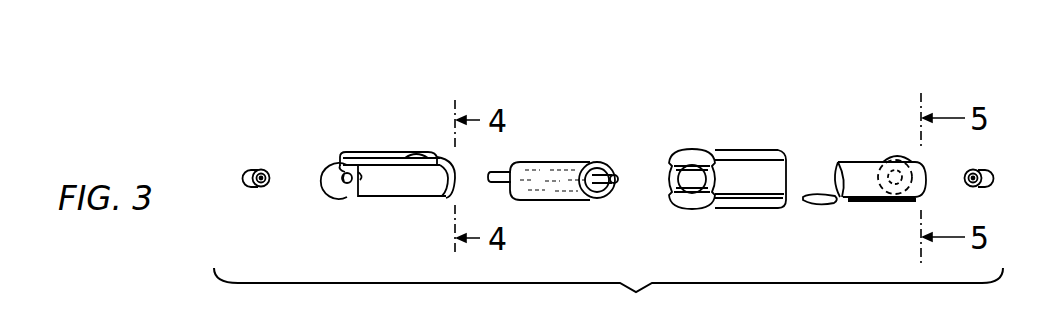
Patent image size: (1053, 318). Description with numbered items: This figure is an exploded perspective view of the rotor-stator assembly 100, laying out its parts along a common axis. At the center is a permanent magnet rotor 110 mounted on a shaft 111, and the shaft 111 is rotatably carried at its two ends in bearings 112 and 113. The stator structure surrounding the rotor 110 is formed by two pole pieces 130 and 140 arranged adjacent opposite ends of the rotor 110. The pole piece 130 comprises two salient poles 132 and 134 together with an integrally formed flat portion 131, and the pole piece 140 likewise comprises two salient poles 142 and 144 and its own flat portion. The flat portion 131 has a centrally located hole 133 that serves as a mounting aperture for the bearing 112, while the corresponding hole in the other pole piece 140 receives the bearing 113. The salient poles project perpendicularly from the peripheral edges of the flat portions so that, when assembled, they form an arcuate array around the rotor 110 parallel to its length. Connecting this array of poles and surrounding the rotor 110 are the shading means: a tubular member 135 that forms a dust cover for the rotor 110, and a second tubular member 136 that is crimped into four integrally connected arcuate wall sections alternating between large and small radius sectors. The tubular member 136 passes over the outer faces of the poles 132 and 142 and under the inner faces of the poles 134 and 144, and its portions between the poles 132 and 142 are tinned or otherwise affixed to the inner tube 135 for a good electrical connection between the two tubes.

The rotor-stator assembly 100 is at (697, 98).
The permanent magnet rotor 110 is at (597, 164).
The shaft 111 is at (616, 184).
The bearing 112 is at (256, 169).
The bearing 113 is at (986, 169).
The pole piece 130 is at (328, 157).
The flat portion 131 is at (390, 198).
The salient pole 132 is at (376, 152).
The hole 133 is at (343, 180).
The salient pole 134 is at (445, 186).
The tubular member 135 is at (539, 162).
The second tubular member 136 is at (736, 149).
The pole piece 140 is at (899, 158).
The salient pole 142 is at (820, 205).
The salient pole 144 is at (857, 161).